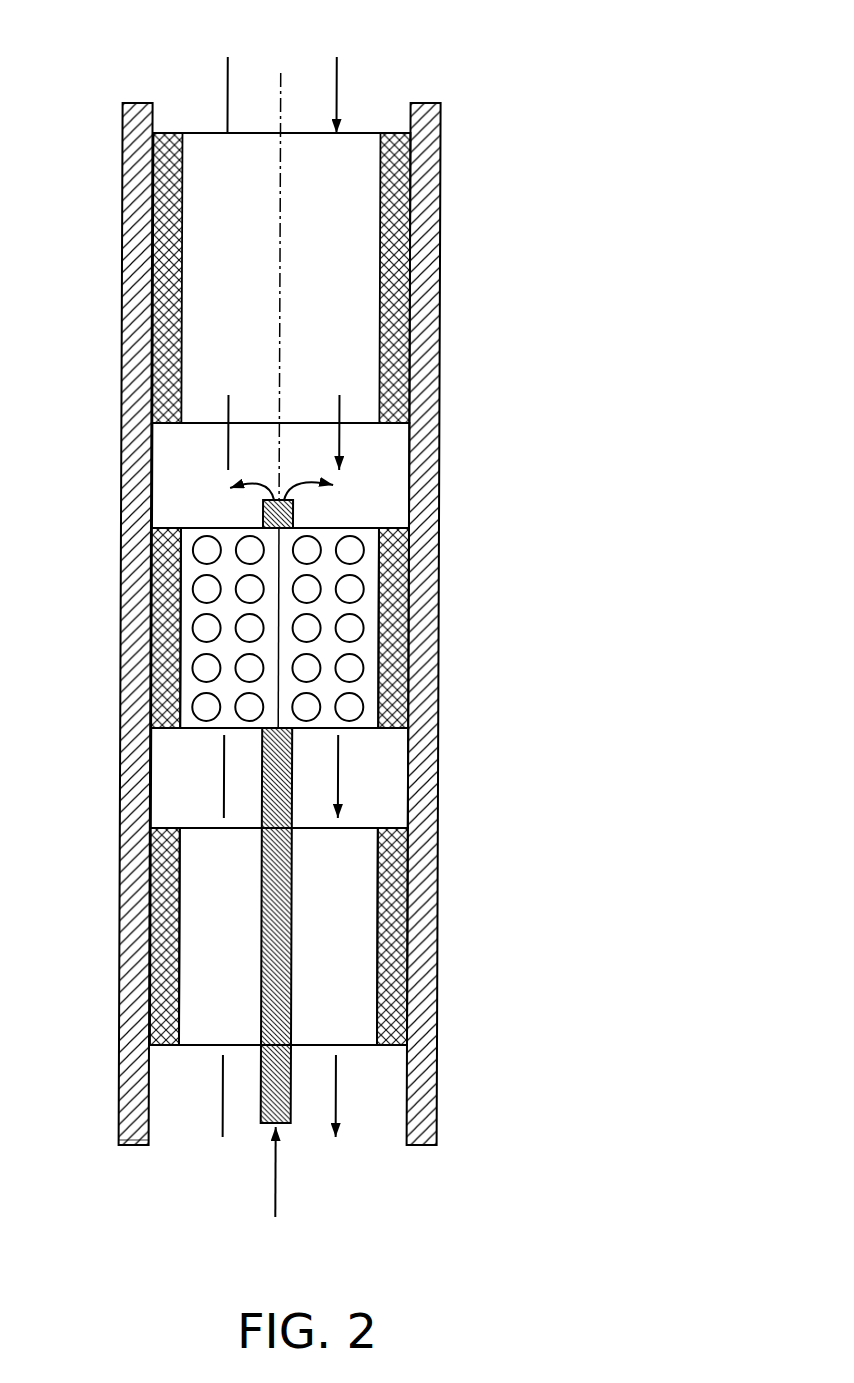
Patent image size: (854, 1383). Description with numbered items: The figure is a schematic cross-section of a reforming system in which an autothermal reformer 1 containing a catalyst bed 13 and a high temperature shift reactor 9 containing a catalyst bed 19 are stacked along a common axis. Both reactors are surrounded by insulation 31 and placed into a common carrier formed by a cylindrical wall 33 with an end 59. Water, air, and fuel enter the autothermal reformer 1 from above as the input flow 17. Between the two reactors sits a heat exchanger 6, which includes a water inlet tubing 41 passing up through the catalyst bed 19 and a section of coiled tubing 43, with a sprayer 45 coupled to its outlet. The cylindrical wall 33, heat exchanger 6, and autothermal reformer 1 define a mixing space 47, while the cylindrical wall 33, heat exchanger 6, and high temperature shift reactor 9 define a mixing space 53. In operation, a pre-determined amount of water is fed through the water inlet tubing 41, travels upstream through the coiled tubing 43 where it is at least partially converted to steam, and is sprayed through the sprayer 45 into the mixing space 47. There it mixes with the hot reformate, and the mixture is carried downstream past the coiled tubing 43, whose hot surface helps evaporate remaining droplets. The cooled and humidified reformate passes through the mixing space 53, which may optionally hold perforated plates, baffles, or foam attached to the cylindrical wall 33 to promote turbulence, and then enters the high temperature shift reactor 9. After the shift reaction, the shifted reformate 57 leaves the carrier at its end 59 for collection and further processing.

The autothermal reformer 1 is at (472, 262).
The heat exchanger 6 is at (93, 467).
The high temperature shift reactor 9 is at (535, 920).
The catalyst bed 13 is at (345, 342).
The input flow 17 is at (232, 74).
The catalyst bed 19 is at (355, 888).
The insulation 31 is at (168, 133).
The cylindrical wall 33 is at (130, 1052).
The water inlet tubing 41 is at (290, 1113).
The coiled tubing 43 is at (352, 707).
The sprayer 45 is at (295, 510).
The mixing space 47 is at (380, 460).
The mixing space 53 is at (372, 765).
The shifted reformate 57 is at (223, 1103).
The end 59 is at (137, 1143).